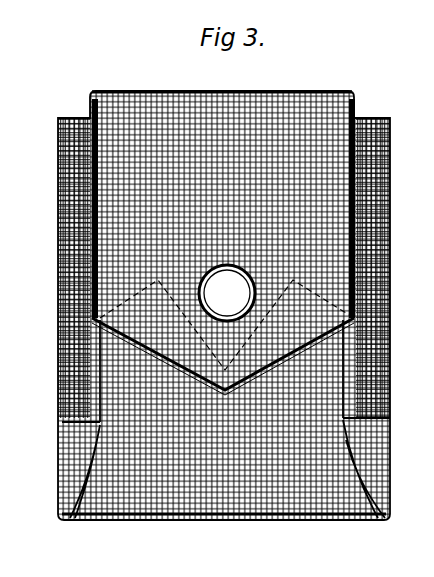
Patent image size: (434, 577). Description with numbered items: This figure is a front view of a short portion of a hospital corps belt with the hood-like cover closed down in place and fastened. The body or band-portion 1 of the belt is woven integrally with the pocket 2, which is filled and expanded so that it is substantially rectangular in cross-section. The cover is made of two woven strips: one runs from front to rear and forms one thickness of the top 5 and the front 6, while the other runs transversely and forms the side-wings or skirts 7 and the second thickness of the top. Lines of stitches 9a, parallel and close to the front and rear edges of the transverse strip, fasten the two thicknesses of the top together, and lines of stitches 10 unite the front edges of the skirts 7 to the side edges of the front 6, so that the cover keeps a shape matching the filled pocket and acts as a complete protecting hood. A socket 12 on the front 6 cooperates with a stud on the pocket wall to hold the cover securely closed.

The body or band-portion 1 is at (62, 315).
The pocket 2 is at (334, 362).
The top of the cover 5 is at (295, 89).
The front of the cover 6 is at (249, 282).
The side-wings or skirts 7 is at (88, 218).
The lines of stitches 9a is at (153, 90).
The lines of stitches 10 is at (62, 162).
The socket 12 is at (203, 273).